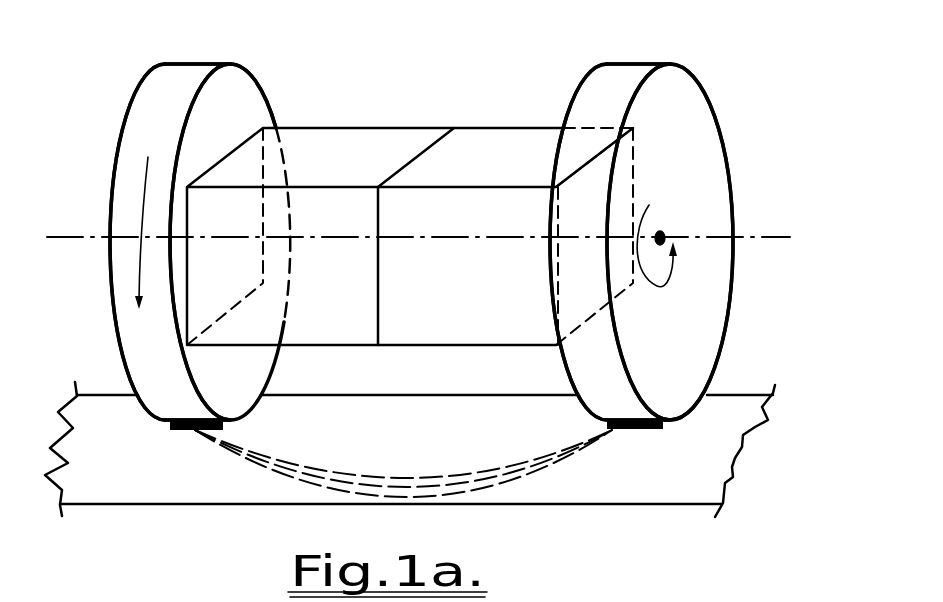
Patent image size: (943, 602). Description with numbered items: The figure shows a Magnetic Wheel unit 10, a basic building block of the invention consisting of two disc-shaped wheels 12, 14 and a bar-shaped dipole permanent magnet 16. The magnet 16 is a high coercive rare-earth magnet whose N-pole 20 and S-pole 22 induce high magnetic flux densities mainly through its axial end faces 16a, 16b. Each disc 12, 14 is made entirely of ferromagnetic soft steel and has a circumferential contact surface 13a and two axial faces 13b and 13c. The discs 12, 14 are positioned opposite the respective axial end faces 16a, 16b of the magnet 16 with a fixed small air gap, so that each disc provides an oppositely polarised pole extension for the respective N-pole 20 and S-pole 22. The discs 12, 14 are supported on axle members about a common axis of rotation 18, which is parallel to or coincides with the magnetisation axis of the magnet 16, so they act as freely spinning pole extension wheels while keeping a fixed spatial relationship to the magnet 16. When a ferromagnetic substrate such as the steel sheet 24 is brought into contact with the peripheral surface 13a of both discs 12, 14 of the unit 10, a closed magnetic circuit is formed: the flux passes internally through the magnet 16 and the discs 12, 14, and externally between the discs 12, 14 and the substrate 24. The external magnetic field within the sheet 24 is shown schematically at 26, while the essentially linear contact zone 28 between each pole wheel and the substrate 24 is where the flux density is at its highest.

The Magnetic Wheel unit 10 is at (431, 215).
The disc-shaped wheel 12 is at (741, 224).
The circumferential contact surface 13a is at (183, 77).
The axial face 13b is at (233, 78).
The axial face 13c is at (116, 152).
The disc-shaped wheel 14 is at (268, 82).
The dipole permanent magnet 16 is at (410, 204).
The axial end face 16a is at (197, 304).
The axial end face 16b is at (562, 304).
The axis of rotation 18 is at (760, 241).
The N-pole 20 is at (352, 171).
The S-pole 22 is at (468, 168).
The steel sheet 24 is at (712, 478).
The external magnetic field 26 is at (518, 490).
The contact zone 28 is at (182, 431).